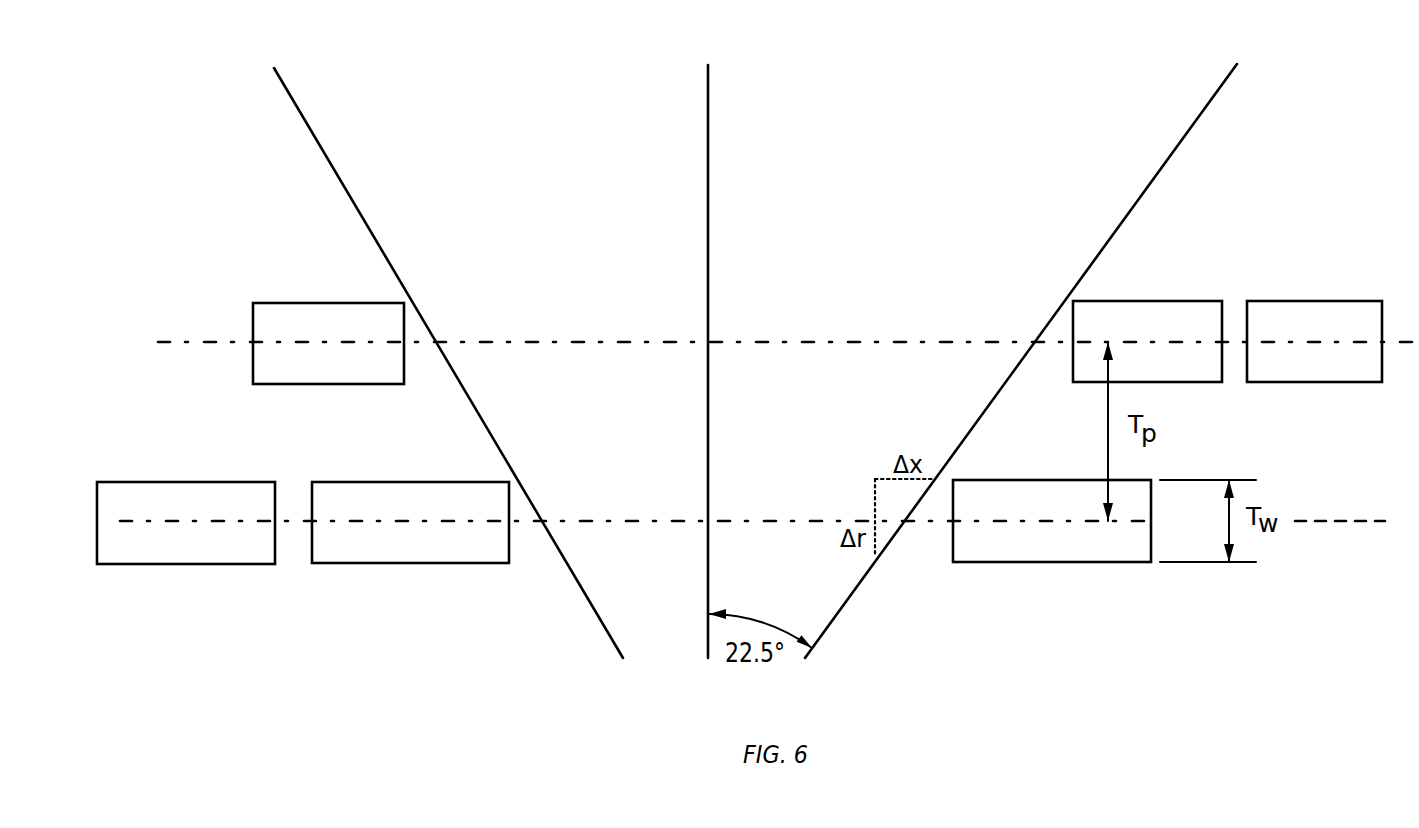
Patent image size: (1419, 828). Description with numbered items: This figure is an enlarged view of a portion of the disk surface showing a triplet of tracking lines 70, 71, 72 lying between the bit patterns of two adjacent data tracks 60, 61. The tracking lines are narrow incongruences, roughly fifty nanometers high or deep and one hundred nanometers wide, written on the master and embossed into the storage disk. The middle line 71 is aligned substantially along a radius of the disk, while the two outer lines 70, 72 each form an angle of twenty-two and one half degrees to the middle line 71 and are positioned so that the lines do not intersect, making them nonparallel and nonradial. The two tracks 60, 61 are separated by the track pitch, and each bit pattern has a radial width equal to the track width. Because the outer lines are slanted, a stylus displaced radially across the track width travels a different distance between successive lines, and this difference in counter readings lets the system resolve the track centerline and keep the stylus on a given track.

The data track 60 is at (208, 343).
The data track 61 is at (288, 523).
The tracking line 70 is at (320, 143).
The middle tracking line 71 is at (709, 197).
The tracking line 72 is at (1181, 140).